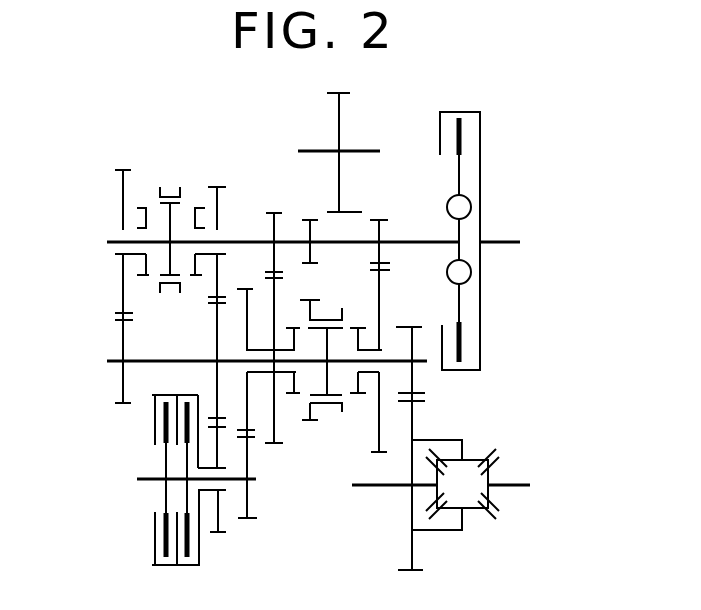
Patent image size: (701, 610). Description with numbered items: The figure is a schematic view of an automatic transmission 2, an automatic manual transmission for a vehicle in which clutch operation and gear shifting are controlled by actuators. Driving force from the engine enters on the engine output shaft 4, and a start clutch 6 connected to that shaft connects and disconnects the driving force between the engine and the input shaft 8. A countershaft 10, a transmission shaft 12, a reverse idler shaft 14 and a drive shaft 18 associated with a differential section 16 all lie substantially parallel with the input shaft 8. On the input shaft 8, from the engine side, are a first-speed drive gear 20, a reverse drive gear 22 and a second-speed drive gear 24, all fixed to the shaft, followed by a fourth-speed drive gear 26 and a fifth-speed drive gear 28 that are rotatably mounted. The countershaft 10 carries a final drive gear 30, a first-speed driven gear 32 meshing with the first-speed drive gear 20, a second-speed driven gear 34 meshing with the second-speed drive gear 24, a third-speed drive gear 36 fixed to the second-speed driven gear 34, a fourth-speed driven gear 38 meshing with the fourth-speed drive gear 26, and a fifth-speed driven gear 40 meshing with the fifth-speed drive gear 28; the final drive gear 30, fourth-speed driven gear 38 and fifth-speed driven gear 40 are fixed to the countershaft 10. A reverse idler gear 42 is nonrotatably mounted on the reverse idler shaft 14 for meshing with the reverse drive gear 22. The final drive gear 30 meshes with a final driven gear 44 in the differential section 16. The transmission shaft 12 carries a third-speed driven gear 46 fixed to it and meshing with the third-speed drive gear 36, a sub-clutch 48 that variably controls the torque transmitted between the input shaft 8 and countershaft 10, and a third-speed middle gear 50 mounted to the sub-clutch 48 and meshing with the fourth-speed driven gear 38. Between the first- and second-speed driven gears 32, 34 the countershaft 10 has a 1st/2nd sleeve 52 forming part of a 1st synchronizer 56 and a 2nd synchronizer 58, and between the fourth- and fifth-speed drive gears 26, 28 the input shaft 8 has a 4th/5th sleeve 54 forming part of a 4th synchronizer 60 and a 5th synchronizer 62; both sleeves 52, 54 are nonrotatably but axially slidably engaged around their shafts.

The automatic transmission 2 is at (504, 110).
The engine output shaft 4 is at (511, 240).
The start clutch 6 is at (482, 160).
The input shaft 8 is at (415, 240).
The countershaft 10 is at (118, 365).
The transmission shaft 12 is at (152, 480).
The reverse idler shaft 14 is at (312, 151).
The differential section 16 is at (500, 450).
The drive shaft 18 is at (522, 487).
The first-speed drive gear 20 is at (381, 220).
The reverse drive gear 22 is at (309, 220).
The second-speed drive gear 24 is at (268, 220).
The fourth-speed drive gear 26 is at (222, 187).
The fifth-speed drive gear 28 is at (118, 188).
The final drive gear 30 is at (413, 378).
The first-speed driven gear 32 is at (380, 290).
The second-speed driven gear 34 is at (287, 452).
The third-speed drive gear 36 is at (247, 415).
The fourth-speed driven gear 38 is at (215, 331).
The fifth-speed driven gear 40 is at (121, 340).
The reverse idler gear 42 is at (340, 120).
The final driven gear 44 is at (414, 552).
The third-speed driven gear 46 is at (250, 505).
The sub-clutch 48 is at (155, 538).
The third-speed middle gear 50 is at (225, 535).
The 1st/2nd sleeve 52 is at (312, 421).
The 4th/5th sleeve 54 is at (175, 189).
The 1st synchronizer 56 is at (355, 402).
The 2nd synchronizer 58 is at (300, 400).
The 4th synchronizer 60 is at (187, 195).
The 5th synchronizer 62 is at (150, 195).